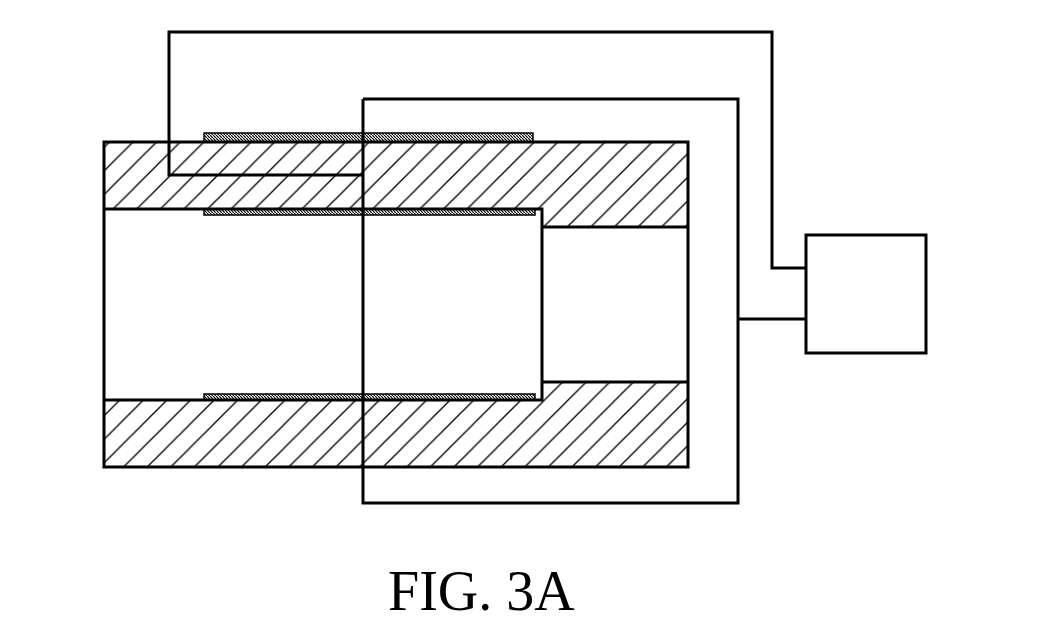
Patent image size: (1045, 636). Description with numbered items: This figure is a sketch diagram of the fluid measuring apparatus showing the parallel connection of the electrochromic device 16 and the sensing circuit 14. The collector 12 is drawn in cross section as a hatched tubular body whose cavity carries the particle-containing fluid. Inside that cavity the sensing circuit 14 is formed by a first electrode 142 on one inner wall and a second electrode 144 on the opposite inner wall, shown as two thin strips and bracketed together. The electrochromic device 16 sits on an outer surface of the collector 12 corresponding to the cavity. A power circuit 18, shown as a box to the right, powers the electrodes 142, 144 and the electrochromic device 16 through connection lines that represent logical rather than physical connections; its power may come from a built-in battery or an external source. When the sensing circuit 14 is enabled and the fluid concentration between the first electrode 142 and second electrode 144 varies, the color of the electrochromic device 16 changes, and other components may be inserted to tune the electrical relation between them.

The collector 12 is at (123, 148).
The sensing circuit 14 is at (369, 304).
The first electrode 142 is at (393, 213).
The second electrode 144 is at (393, 396).
The electrochromic device 16 is at (277, 135).
The power circuit 18 is at (827, 238).